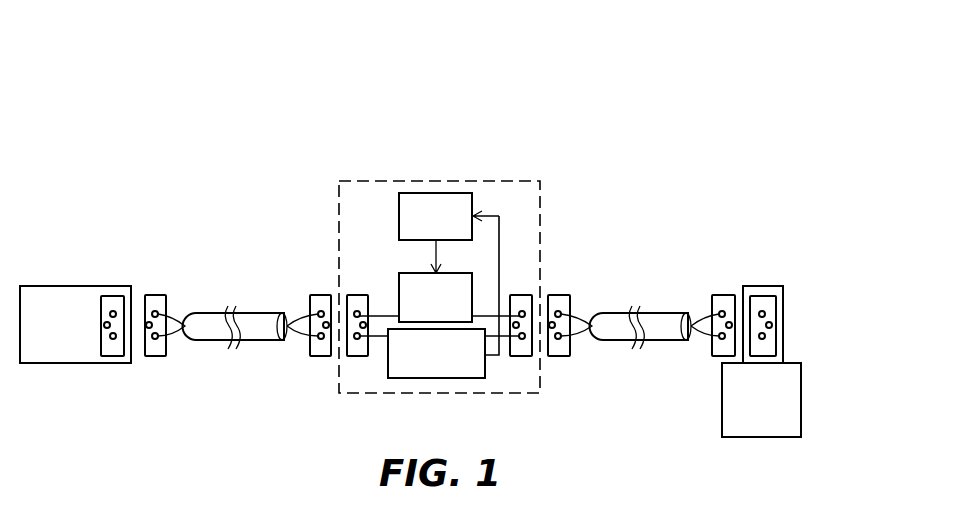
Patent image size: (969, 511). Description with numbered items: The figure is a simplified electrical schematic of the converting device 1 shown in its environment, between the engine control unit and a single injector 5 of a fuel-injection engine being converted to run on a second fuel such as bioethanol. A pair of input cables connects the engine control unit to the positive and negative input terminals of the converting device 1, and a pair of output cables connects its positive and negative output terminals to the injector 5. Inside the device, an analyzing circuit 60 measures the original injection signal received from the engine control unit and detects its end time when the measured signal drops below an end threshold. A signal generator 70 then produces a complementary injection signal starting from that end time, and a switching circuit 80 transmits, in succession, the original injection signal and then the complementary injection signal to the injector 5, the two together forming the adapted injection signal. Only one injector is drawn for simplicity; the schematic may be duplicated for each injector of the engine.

The converting device 1 is at (818, 116).
The injector 5 is at (761, 361).
The analyzing circuit 60 is at (436, 353).
The signal generator 70 is at (435, 216).
The switching circuit 80 is at (435, 298).